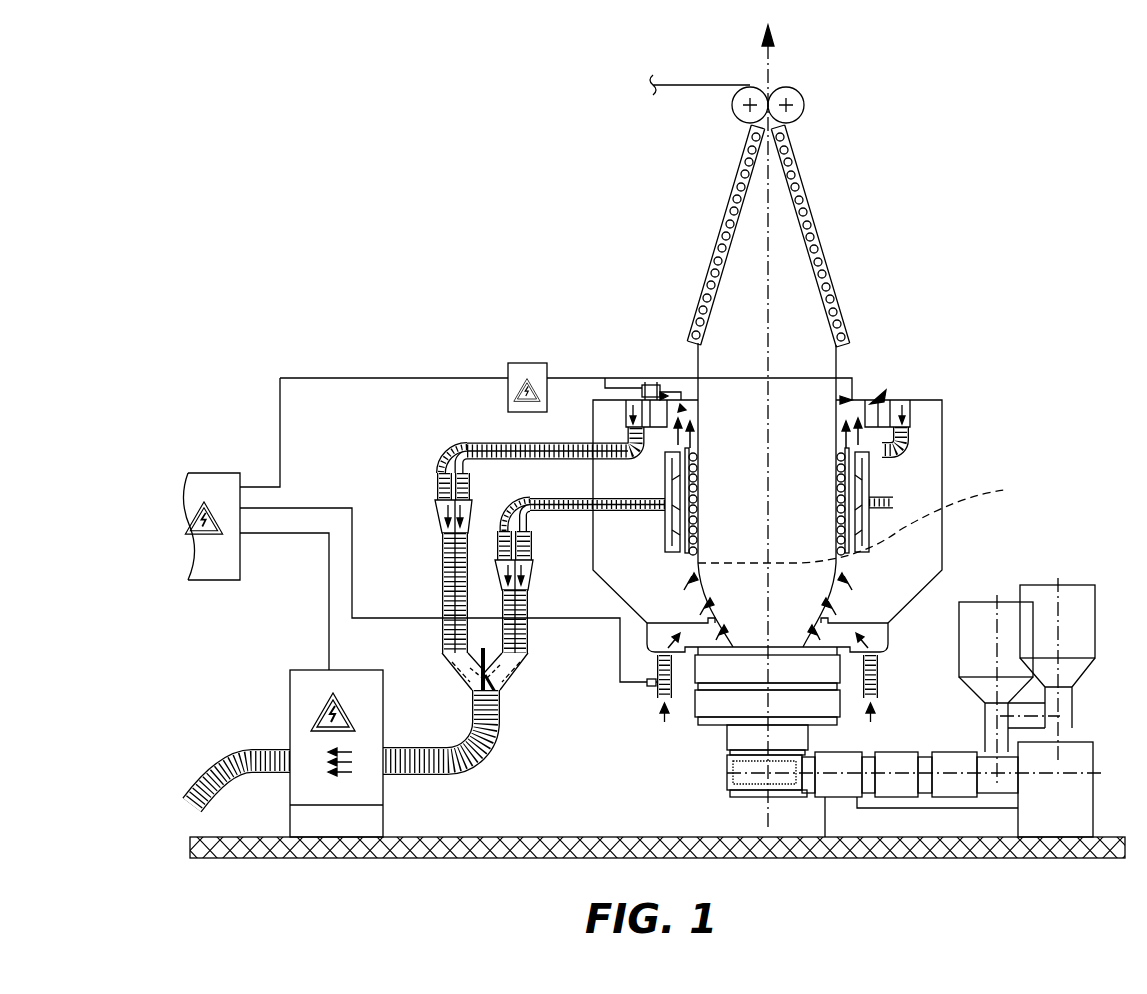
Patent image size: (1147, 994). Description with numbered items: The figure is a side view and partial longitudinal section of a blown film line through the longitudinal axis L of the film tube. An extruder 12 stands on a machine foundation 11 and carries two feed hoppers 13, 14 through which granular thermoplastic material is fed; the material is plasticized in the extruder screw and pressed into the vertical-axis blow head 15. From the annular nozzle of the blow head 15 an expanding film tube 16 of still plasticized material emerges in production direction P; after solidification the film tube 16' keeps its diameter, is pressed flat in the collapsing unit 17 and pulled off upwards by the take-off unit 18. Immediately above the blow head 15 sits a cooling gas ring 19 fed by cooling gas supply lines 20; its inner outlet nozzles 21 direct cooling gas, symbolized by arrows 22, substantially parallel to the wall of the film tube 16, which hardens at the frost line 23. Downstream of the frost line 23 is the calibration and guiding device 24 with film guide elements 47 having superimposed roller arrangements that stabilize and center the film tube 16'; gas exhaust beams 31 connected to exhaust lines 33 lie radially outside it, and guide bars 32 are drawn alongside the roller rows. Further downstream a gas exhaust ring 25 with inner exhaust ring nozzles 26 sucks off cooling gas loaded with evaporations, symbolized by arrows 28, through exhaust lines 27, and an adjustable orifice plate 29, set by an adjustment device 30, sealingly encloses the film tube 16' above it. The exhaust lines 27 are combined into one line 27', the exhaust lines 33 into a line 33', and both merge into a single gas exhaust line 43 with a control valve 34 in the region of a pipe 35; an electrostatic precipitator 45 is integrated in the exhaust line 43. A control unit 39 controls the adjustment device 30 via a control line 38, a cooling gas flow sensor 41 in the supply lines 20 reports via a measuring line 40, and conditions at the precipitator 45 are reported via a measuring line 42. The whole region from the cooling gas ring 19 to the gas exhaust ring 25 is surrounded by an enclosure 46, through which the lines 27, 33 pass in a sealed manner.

The machine foundation 11 is at (560, 837).
The extruder 12 is at (897, 760).
The feed hopper 13 is at (1003, 600).
The feed hopper 14 is at (1073, 585).
The blow head 15 is at (722, 718).
The film tube 16 is at (752, 495).
The film tube 16' is at (679, 187).
The collapsing unit 17 is at (822, 237).
The take-off unit 18 is at (805, 103).
The cooling gas ring 19 is at (890, 625).
The cooling gas supply line 20 is at (880, 678).
The inner outlet nozzle 21 is at (840, 590).
The arrows 22 is at (858, 578).
The frost line 23 is at (865, 519).
The calibration and guiding device 24 is at (875, 535).
The gas exhaust ring 25 is at (880, 470).
The inner exhaust ring nozzle 26 is at (882, 396).
The exhaust line 27 is at (538, 394).
The line 27' is at (416, 563).
The arrows 28 is at (855, 400).
The adjustable orifice plate 29 is at (700, 395).
The adjustment device 30 is at (650, 386).
The gas exhaust beam 31 is at (870, 510).
The guide bar 32 is at (873, 493).
The exhaust line 33 is at (584, 463).
The line 33' is at (542, 592).
The control valve 34 is at (490, 685).
The pipe 35 is at (515, 672).
The control line 38 is at (380, 378).
The control unit 39 is at (530, 363).
The measuring line 40 is at (382, 618).
The cooling gas flow sensor 41 is at (648, 690).
The measuring line 42 is at (329, 618).
The gas exhaust line 43 is at (455, 778).
The electrostatic precipitator 45 is at (290, 705).
The enclosure 46 is at (942, 440).
The film guide element 47 is at (670, 520).
The production direction P is at (778, 60).
The longitudinal axis L is at (770, 318).